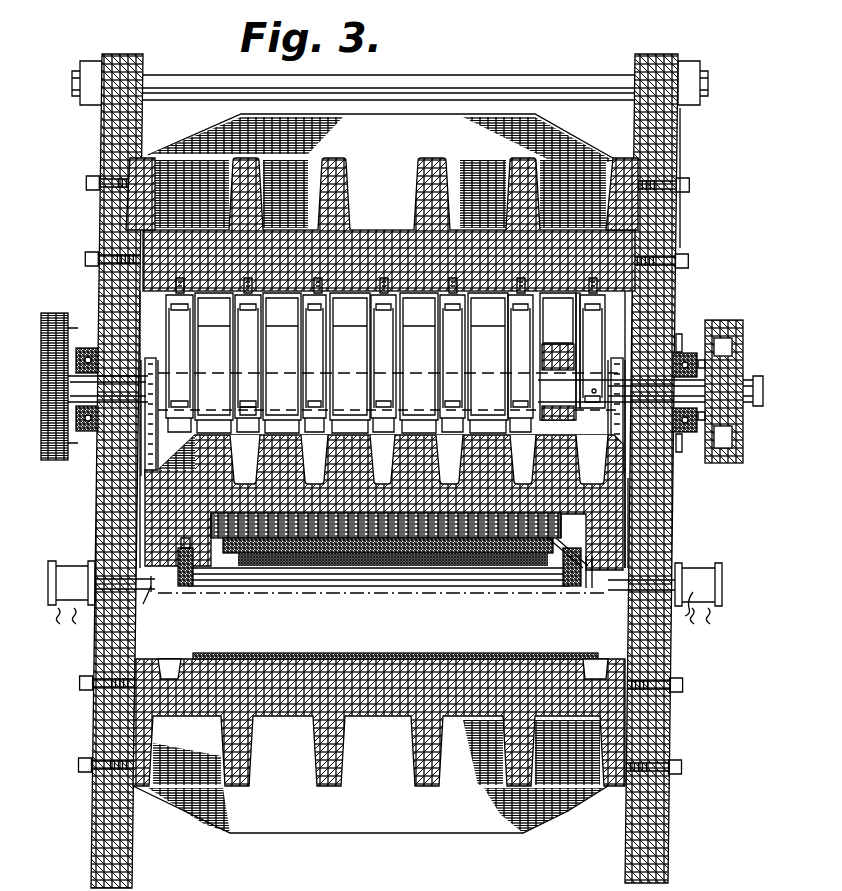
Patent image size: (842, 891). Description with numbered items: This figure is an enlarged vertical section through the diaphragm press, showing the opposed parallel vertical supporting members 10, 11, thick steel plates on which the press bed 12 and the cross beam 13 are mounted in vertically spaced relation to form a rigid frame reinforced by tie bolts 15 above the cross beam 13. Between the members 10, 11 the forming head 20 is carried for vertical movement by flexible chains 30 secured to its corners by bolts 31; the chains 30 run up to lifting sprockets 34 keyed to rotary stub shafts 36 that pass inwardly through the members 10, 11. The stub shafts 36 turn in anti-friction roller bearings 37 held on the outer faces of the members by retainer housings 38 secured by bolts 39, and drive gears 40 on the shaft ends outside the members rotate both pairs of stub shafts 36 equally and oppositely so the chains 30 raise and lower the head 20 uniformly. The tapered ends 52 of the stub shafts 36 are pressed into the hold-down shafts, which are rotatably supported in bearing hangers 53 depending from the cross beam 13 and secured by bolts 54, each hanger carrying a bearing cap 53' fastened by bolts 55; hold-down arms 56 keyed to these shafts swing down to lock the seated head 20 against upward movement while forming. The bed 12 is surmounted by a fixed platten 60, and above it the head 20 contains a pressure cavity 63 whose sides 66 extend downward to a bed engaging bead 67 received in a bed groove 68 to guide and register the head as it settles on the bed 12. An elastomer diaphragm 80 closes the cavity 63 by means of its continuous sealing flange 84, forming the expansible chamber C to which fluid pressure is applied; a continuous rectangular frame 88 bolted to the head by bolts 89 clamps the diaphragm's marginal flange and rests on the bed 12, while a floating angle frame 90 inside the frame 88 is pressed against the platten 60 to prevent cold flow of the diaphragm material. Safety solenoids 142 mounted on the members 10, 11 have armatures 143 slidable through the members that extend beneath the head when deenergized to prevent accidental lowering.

The vertical supporting member 10 is at (668, 136).
The vertical supporting member 11 is at (100, 140).
The press bed 12 is at (165, 550).
The cross beam 13 is at (508, 118).
The tie bolts 15 is at (447, 70).
The head 20 is at (630, 520).
The flexible chains 30 is at (140, 432).
The bolts 31 is at (143, 465).
The lifting sprockets 34 is at (608, 362).
The rotary stub shafts 36 is at (118, 385).
The anti-friction roller bearings 37 is at (78, 338).
The retainer housings 38 is at (712, 340).
The bolts 39 is at (688, 444).
The drive gears 40 is at (58, 312).
The tapered ends 52 is at (541, 375).
The bearing hangers 53 is at (374, 363).
The bearing cap 53' is at (347, 394).
The bolts 54 is at (388, 245).
The bolts 55 is at (278, 392).
The hold-down arms 56 is at (196, 344).
The fixed platten 60 is at (336, 647).
The pressure cavity 63 is at (292, 508).
The sides 66 is at (140, 520).
The bed engaging bead 67 is at (592, 582).
The bed groove 68 is at (584, 652).
The diaphragm 80 is at (400, 562).
The sealing flange 84 is at (215, 548).
The rectangular frame 88 is at (180, 572).
The bolts 89 is at (568, 578).
The floating angle frame 90 is at (556, 565).
The safety solenoids 142 is at (56, 560).
The armatures 143 is at (140, 584).
The expansible chamber C is at (372, 515).